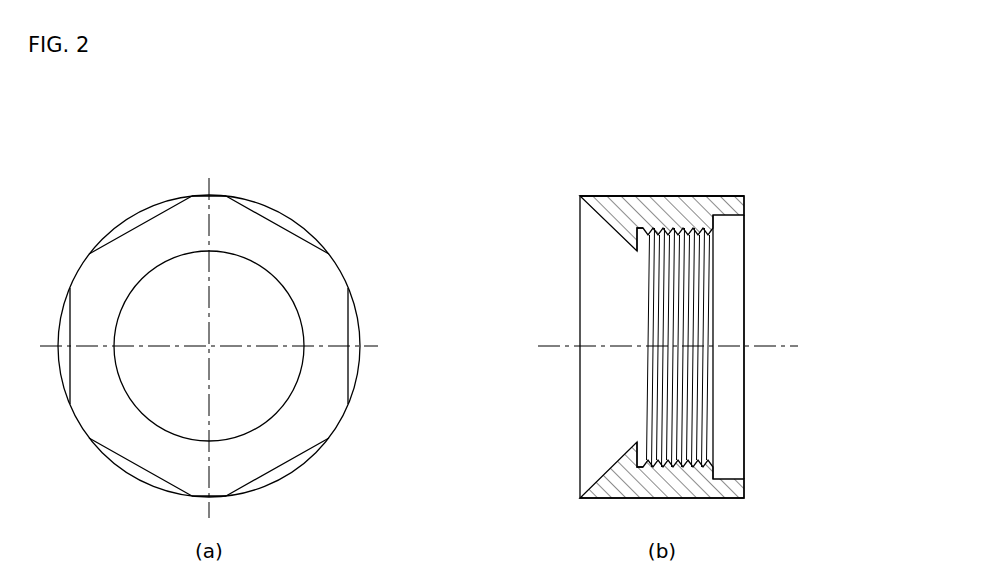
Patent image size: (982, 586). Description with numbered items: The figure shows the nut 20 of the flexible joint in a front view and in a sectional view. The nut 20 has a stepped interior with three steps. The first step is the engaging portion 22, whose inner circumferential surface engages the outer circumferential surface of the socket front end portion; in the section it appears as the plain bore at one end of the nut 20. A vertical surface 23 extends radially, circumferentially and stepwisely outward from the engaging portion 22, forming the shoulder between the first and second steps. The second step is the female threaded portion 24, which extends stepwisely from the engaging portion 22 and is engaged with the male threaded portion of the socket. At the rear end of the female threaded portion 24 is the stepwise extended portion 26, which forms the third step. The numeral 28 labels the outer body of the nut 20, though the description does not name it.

The nut 20 is at (112, 192).
The engaging portion 22 is at (613, 235).
The vertical surface 23 is at (645, 228).
The female threaded portion 24 is at (697, 233).
The extended portion 26 is at (730, 216).
The outer surface 28 is at (690, 196).